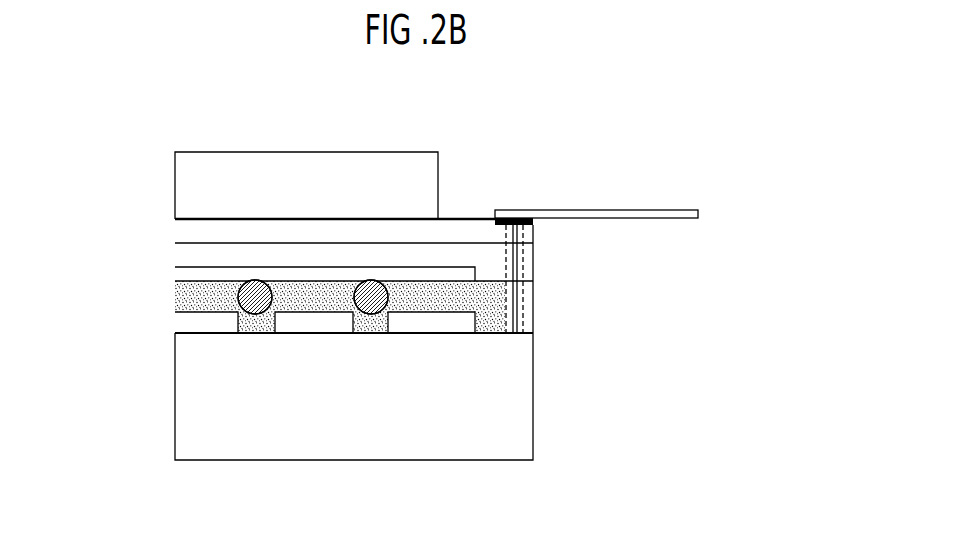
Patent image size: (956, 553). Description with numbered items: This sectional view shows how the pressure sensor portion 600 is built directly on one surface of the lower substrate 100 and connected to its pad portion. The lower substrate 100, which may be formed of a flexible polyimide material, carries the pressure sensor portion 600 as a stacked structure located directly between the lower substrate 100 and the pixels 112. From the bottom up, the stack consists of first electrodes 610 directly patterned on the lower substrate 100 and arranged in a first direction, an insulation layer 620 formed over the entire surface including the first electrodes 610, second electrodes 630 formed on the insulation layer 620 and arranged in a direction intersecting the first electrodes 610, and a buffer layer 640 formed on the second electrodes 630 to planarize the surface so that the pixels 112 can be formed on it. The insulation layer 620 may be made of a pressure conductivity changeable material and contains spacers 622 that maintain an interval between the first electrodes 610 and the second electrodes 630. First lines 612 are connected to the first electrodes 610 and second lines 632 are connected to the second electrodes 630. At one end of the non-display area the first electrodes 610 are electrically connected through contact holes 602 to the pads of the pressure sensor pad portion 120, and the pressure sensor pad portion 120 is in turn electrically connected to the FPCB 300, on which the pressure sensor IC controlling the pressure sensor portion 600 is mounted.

The lower substrate 100 is at (178, 393).
The pixels 112 is at (176, 187).
The pressure sensor pad portion 120 is at (513, 217).
The FPCB 300 is at (653, 211).
The pressure sensor portion 600 is at (93, 220).
The first electrodes 610 is at (176, 326).
The first lines 612 is at (497, 335).
The insulation layer 620 is at (176, 299).
The spacers 622 is at (255, 299).
The second electrodes 630 is at (176, 264).
The second lines 632 is at (515, 258).
The buffer layer 640 is at (176, 232).
The contact holes 602 is at (524, 293).